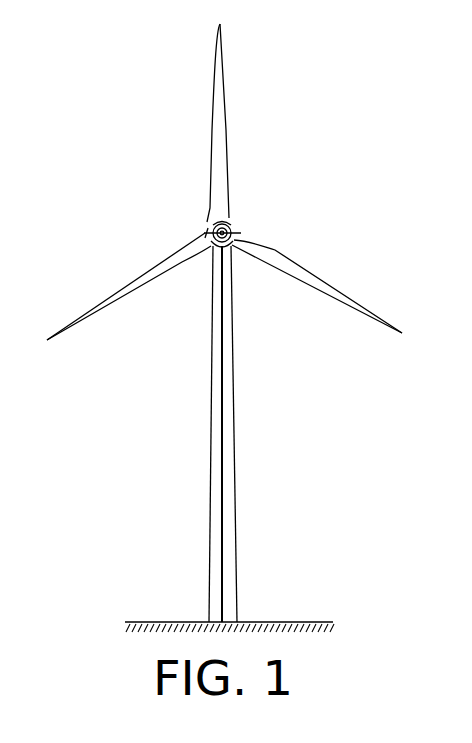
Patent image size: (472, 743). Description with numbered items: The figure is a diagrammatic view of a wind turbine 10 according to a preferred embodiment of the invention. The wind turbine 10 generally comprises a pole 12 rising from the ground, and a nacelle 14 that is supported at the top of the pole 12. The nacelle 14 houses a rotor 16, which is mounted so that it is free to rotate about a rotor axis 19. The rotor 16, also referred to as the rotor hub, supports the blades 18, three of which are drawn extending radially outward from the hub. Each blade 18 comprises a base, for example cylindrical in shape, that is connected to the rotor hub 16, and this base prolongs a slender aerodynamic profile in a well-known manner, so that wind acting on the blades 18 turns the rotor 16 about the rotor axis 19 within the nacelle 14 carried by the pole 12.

The wind turbine 10 is at (305, 147).
The pole 12 is at (235, 436).
The nacelle 14 is at (233, 223).
The rotor 16 is at (240, 221).
The blades 18 is at (310, 275).
The rotor axis 19 is at (207, 225).